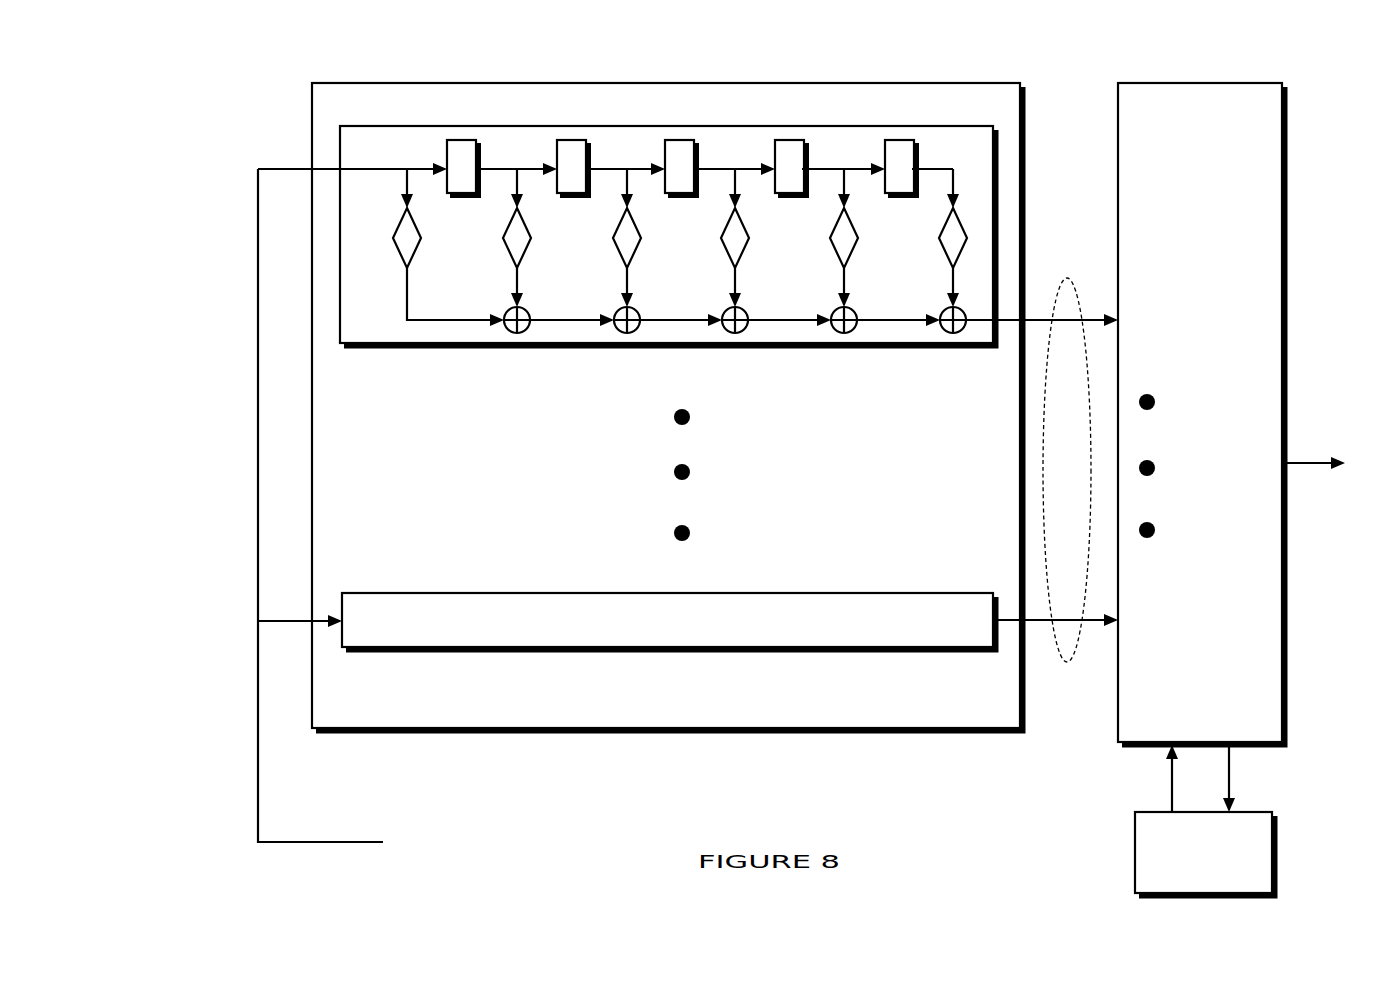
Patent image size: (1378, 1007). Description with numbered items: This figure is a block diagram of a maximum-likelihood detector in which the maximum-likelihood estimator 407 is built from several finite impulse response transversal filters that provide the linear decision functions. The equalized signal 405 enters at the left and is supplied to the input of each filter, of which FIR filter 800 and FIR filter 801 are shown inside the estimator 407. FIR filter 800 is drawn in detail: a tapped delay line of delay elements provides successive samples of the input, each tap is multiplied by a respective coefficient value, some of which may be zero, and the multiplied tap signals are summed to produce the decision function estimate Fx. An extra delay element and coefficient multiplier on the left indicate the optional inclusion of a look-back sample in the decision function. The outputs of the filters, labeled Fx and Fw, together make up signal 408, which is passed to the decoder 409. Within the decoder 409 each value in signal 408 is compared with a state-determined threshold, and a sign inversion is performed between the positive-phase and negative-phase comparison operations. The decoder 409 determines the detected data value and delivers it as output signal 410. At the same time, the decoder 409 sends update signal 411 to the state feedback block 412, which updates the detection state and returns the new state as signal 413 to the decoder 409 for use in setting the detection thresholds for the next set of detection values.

The equalized signal 405 is at (285, 168).
The maximum-likelihood estimator 407 is at (665, 83).
The detection values signal 408 is at (1060, 278).
The decoder 409 is at (1200, 83).
The output signal 410 is at (1297, 463).
The update signal 411 is at (1232, 770).
The state feedback block 412 is at (1135, 840).
The new state signal 413 is at (1170, 797).
The FIR filter 800 is at (818, 350).
The FIR filter 801 is at (832, 593).